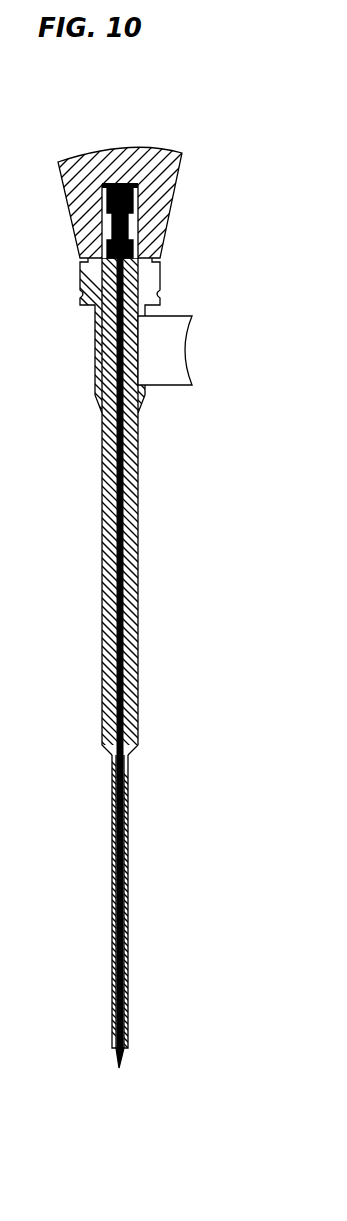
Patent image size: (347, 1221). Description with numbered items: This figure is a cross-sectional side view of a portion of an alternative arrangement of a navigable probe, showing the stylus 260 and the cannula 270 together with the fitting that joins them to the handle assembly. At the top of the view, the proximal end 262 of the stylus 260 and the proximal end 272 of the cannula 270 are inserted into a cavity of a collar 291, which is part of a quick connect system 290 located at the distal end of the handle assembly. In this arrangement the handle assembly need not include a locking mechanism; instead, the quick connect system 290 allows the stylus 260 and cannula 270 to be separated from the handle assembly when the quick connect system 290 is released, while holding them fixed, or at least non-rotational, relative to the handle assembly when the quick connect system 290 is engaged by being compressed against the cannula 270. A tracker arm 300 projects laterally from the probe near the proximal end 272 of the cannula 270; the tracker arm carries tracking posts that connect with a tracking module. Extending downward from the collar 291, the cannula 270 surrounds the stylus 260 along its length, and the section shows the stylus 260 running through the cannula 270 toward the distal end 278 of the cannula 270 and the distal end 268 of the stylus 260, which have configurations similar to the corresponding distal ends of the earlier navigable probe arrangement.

The quick connect system 290 is at (145, 206).
The collar 291 is at (80, 203).
The proximal end of the stylus 262 is at (118, 220).
The proximal end of the cannula 272 is at (100, 333).
The cannula 270 is at (98, 536).
The tracker arm 300 is at (170, 350).
The distal end of the cannula 278 is at (112, 823).
The distal end of the stylus 268 is at (118, 883).
The stylus 260 is at (113, 1060).